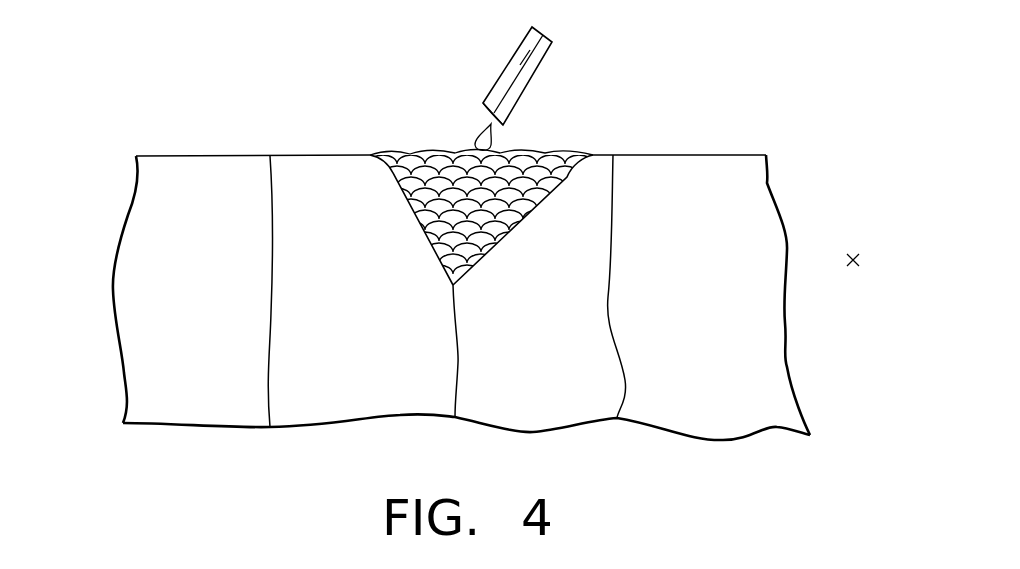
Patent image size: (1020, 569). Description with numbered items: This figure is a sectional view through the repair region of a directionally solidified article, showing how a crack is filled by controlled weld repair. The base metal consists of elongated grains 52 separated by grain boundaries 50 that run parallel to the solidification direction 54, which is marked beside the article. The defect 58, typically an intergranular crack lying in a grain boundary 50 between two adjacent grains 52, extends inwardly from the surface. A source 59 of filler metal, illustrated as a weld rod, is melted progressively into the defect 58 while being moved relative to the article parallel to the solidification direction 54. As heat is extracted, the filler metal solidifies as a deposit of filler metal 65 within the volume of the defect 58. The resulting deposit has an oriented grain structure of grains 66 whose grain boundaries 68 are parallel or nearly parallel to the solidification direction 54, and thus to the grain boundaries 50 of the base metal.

The grain boundaries 50 is at (452, 317).
The grains 52 is at (333, 170).
The solidification direction 54 is at (852, 268).
The defect 58 is at (553, 173).
The source of the filler metal 59 is at (545, 63).
The deposit of filler metal 65 is at (465, 222).
The grains 66 is at (400, 163).
The grain boundaries 68 is at (415, 183).